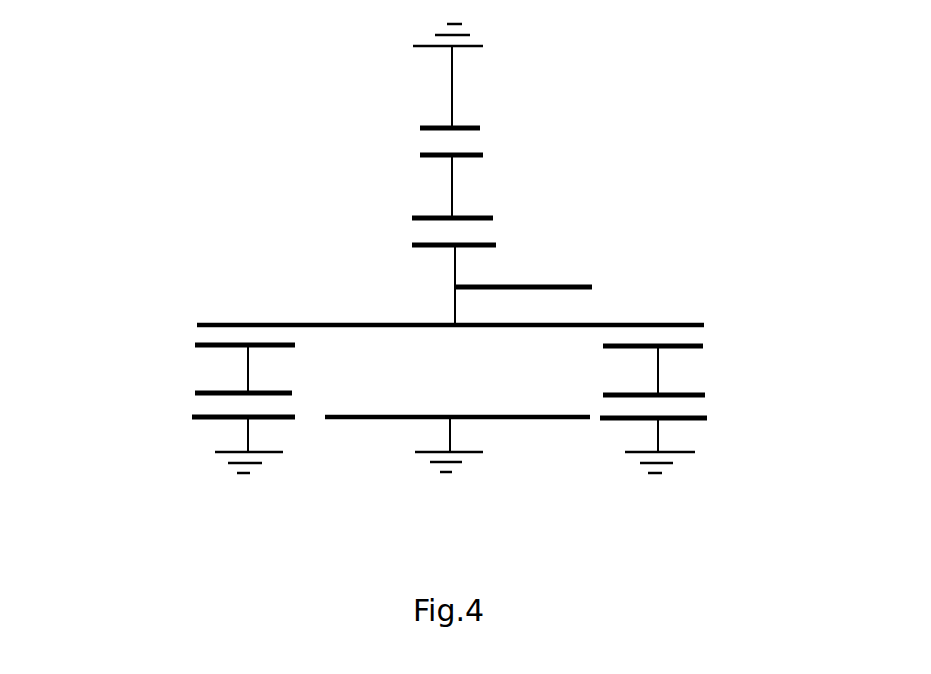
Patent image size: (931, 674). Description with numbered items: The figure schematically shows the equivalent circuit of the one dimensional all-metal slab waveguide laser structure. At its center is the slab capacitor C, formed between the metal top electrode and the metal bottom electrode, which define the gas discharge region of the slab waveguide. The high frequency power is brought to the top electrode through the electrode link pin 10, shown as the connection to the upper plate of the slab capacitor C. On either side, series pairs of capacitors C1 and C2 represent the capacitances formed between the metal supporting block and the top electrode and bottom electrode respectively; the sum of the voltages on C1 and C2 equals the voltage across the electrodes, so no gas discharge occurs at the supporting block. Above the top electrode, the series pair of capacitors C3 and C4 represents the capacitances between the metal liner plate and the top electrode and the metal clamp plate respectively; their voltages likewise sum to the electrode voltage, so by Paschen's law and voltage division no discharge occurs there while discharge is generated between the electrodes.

The electrode link pin 10 is at (575, 278).
The slab capacitor C is at (378, 347).
The capacitor C1 is at (225, 316).
The capacitor C2 is at (196, 389).
The capacitor C3 is at (407, 211).
The capacitor C4 is at (478, 123).